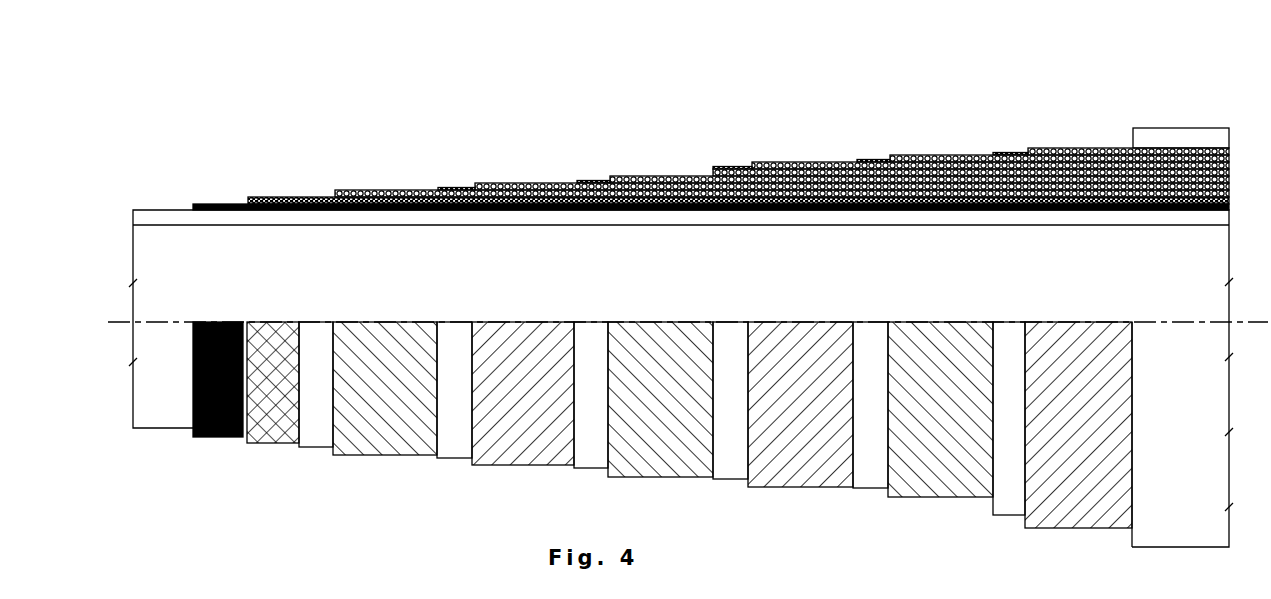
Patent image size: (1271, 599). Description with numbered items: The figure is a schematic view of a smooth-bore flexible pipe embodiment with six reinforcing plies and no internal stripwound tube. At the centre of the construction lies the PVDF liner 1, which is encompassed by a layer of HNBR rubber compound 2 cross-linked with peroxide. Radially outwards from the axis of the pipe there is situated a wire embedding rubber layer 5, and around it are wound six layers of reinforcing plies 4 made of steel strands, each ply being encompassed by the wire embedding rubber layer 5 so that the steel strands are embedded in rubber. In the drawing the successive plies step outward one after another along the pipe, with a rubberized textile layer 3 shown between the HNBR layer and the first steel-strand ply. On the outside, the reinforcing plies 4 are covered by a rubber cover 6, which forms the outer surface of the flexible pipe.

The PVDF liner 1 is at (173, 211).
The layer of HNBR rubber compound 2 is at (215, 204).
The rubberized textile layer 3 is at (270, 200).
The reinforcing ply 4 is at (363, 191).
The wire embedding rubber layer 5 is at (318, 197).
The rubber cover 6 is at (1178, 136).